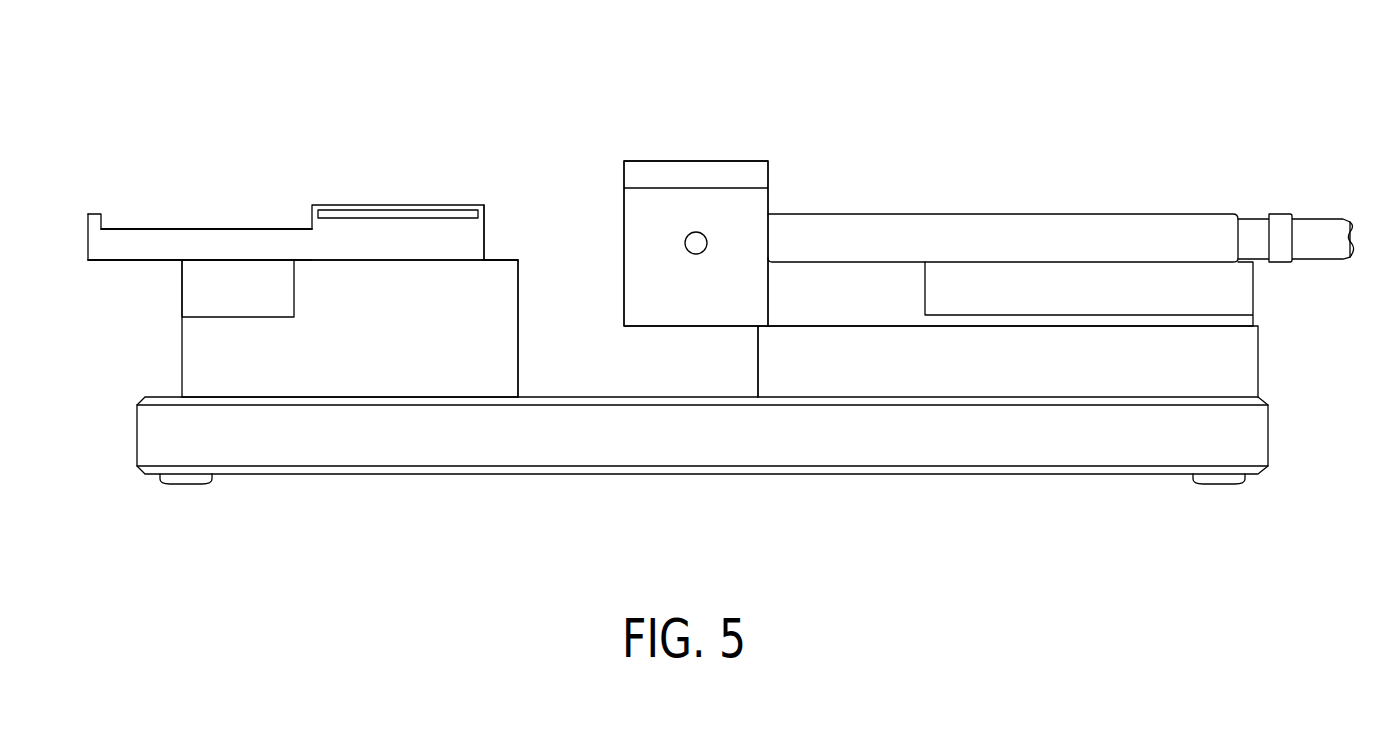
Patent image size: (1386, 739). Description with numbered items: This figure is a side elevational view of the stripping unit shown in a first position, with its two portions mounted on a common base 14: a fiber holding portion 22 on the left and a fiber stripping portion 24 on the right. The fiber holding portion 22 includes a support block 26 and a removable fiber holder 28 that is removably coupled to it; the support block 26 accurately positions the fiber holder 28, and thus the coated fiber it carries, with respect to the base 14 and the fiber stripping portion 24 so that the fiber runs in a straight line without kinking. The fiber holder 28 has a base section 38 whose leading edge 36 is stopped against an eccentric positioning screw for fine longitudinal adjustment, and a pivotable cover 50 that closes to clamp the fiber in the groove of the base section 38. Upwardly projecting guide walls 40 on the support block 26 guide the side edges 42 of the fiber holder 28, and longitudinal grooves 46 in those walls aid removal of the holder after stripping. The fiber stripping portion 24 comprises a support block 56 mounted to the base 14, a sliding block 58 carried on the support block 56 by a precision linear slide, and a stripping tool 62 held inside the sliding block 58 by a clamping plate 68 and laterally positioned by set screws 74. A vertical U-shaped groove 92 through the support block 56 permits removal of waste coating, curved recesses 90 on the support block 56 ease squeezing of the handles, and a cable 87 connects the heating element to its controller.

The base 14 is at (473, 443).
The fiber holding portion 22 is at (313, 148).
The fiber stripping portion 24 is at (1045, 123).
The support block 26 is at (180, 362).
The removable fiber holder 28 is at (145, 228).
The leading edge 36 is at (490, 230).
The base section 38 is at (233, 228).
The guide walls 40 is at (500, 268).
The side edges 42 is at (138, 250).
The longitudinal grooves 46 is at (203, 297).
The cover 50 is at (395, 207).
The support block 56 is at (1213, 370).
The sliding block 58 is at (1240, 318).
The stripping tool 62 is at (913, 238).
The clamping plate 68 is at (738, 161).
The set screws 74 is at (694, 238).
The cable 87 is at (1320, 232).
The curved recesses 90 is at (1187, 278).
The vertical U-shaped groove 92 is at (758, 365).